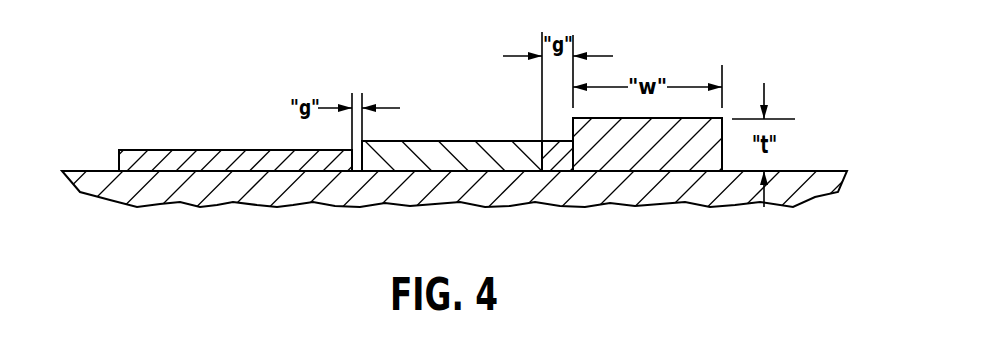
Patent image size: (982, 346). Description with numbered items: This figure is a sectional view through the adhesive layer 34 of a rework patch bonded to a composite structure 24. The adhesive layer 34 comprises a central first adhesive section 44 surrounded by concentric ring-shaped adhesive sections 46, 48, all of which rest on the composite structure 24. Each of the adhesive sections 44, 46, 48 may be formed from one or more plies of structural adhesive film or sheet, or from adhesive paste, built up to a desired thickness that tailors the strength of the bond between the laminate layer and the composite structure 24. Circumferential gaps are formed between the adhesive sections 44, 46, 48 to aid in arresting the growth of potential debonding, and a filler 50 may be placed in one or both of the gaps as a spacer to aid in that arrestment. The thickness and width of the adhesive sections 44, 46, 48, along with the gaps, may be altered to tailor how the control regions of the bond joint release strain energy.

The composite structure 24 is at (130, 185).
The adhesive layer 34 is at (135, 102).
The first adhesive section 44 is at (225, 160).
The adhesive section 46 is at (452, 156).
The adhesive section 48 is at (650, 142).
The filler 50 is at (558, 155).